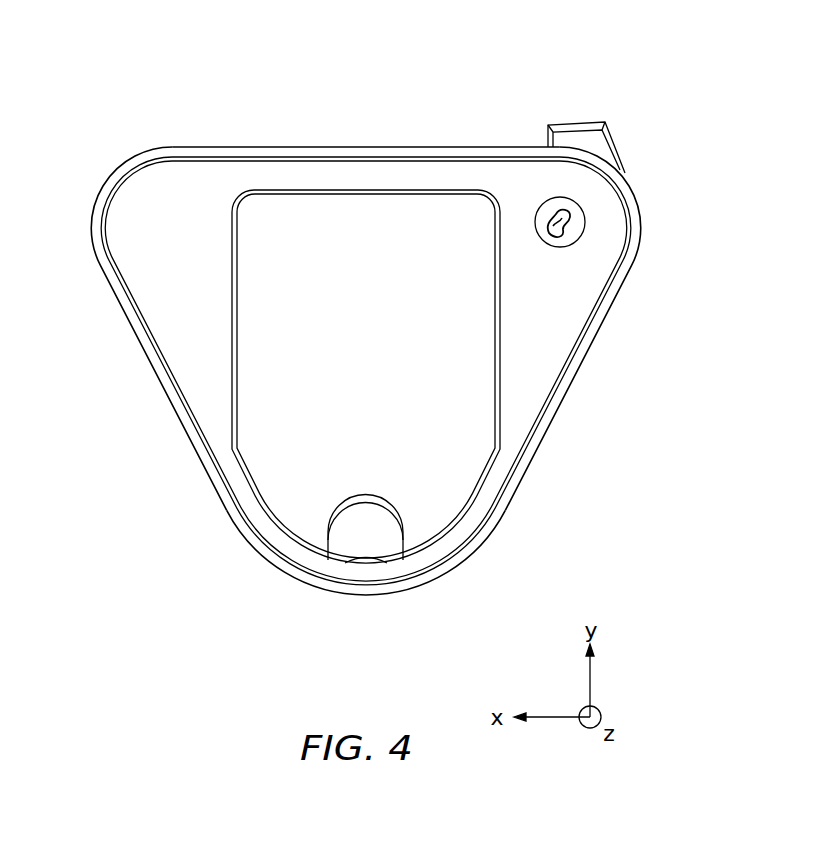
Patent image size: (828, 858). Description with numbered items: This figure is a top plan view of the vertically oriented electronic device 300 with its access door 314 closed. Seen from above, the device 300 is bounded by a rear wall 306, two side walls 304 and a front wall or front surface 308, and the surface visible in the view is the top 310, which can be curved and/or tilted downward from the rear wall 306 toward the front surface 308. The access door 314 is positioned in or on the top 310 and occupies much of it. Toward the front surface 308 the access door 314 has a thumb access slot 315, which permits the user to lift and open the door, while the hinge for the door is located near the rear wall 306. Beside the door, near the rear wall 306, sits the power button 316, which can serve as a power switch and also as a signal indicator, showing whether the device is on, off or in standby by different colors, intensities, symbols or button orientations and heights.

The vertically oriented electronic device 300 is at (422, 77).
The side walls 304 is at (573, 378).
The rear wall 306 is at (347, 146).
The front surface 308 is at (372, 588).
The top 310 is at (200, 318).
The access door 314 is at (302, 295).
The thumb access slot 315 is at (360, 535).
The power button 316 is at (562, 212).